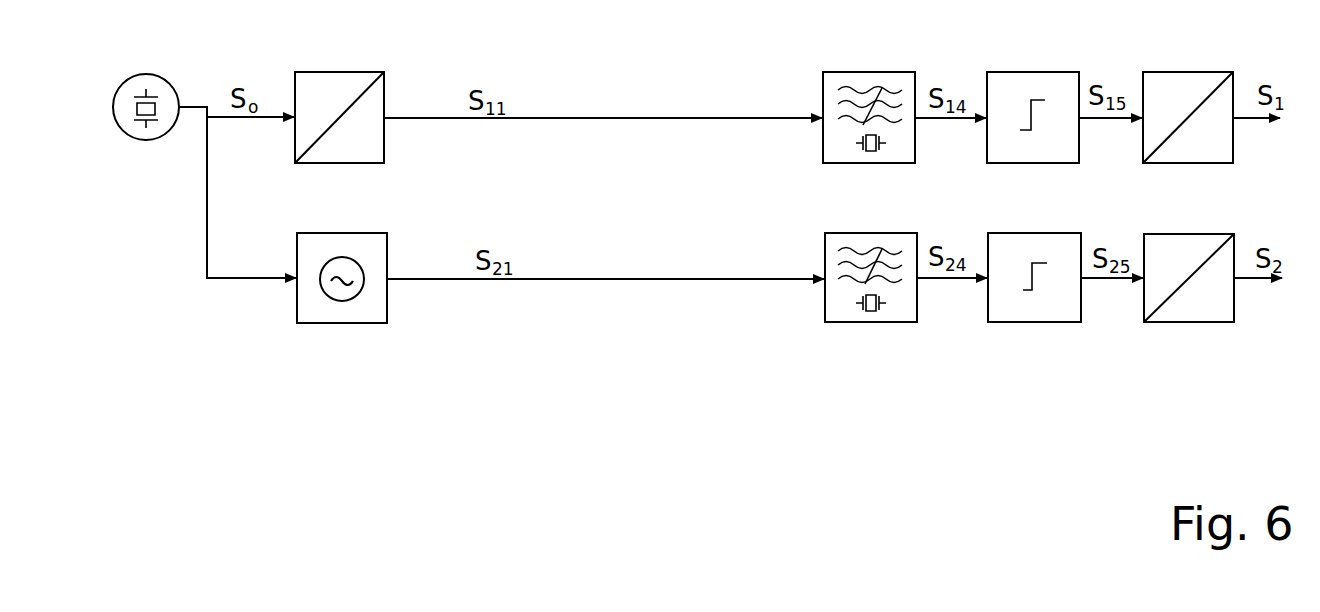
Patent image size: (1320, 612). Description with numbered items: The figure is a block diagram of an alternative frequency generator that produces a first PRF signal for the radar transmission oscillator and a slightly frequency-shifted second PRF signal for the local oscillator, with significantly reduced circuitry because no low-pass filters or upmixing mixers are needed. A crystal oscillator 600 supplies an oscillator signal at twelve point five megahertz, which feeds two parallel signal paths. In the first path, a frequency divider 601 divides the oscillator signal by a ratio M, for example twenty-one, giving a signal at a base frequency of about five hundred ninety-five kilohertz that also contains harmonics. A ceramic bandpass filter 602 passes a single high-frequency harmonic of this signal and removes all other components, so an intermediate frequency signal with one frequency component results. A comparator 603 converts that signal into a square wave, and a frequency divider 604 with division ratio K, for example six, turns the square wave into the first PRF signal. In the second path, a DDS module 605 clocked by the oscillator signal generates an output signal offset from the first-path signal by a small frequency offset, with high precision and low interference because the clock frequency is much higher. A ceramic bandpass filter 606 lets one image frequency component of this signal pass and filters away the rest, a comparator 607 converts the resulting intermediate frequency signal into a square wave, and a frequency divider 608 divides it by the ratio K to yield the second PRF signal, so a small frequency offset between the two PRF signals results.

The crystal oscillator 600 is at (146, 73).
The frequency divider 601 is at (346, 97).
The ceramic bandpass filter 602 is at (880, 93).
The comparator 603 is at (1022, 82).
The frequency divider 604 is at (1202, 85).
The DDS module 605 is at (318, 305).
The ceramic bandpass filter 606 is at (898, 311).
The comparator 607 is at (1018, 315).
The frequency divider 608 is at (1182, 311).